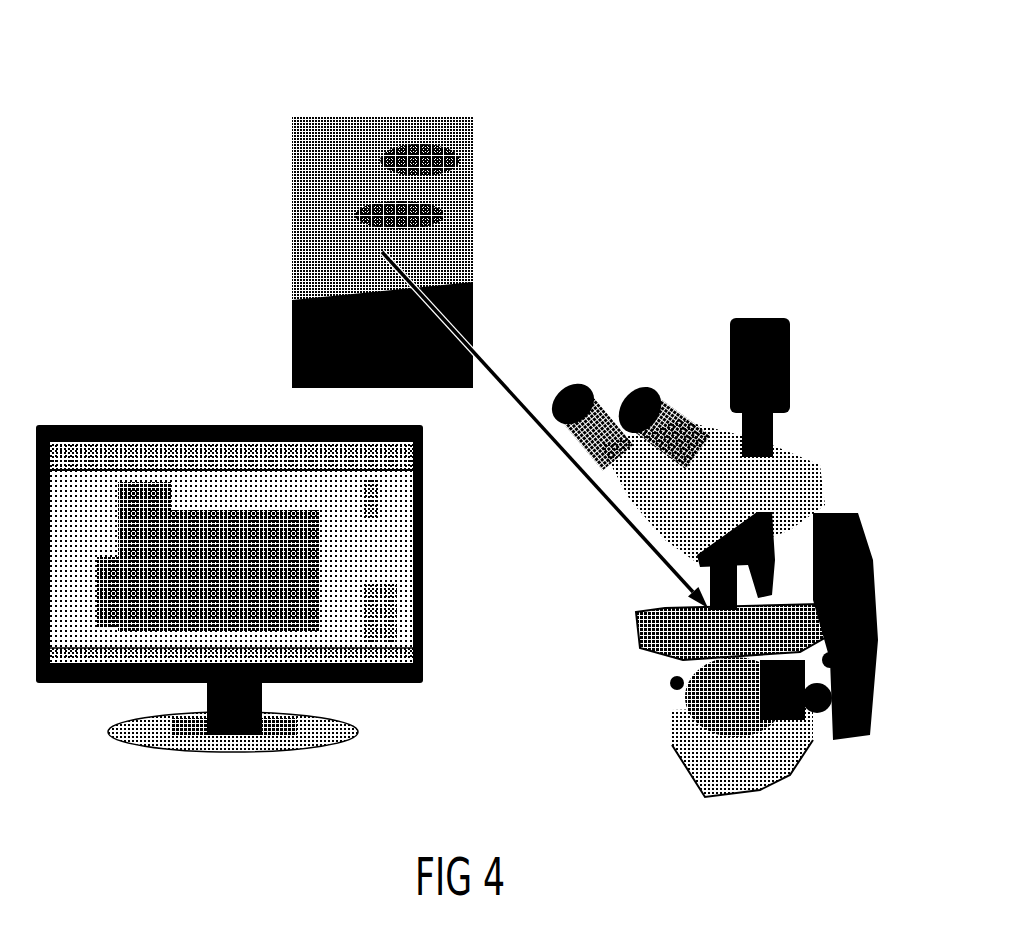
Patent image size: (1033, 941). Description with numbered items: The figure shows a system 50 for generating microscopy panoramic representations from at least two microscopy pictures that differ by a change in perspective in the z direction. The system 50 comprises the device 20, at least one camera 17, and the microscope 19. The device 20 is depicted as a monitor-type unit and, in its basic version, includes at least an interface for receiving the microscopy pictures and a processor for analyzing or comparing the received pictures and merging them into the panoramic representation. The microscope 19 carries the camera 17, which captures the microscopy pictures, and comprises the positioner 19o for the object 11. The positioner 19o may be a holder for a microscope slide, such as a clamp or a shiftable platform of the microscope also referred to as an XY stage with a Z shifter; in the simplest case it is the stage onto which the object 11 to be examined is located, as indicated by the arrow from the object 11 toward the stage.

The system 50 is at (900, 40).
The object 11 is at (345, 220).
The device 20 is at (172, 423).
The camera 17 is at (755, 318).
The microscope 19 is at (740, 508).
The positioner 19o is at (793, 617).